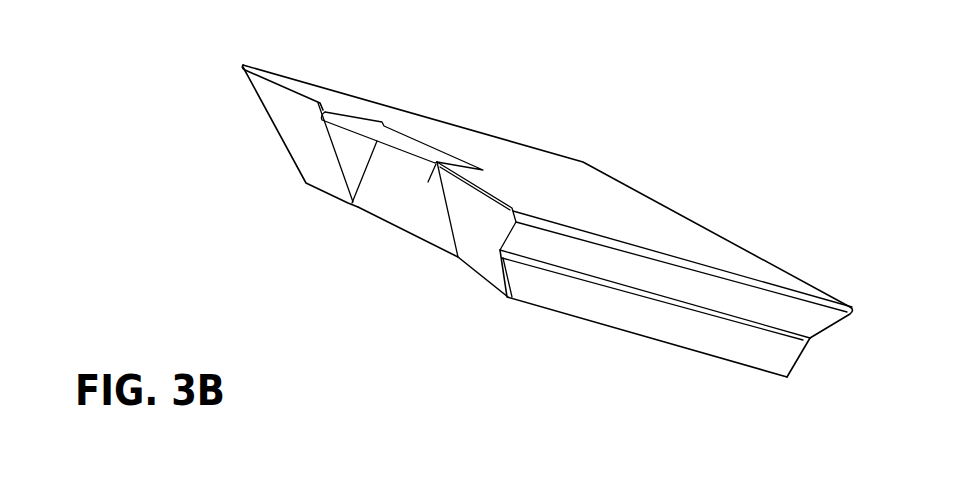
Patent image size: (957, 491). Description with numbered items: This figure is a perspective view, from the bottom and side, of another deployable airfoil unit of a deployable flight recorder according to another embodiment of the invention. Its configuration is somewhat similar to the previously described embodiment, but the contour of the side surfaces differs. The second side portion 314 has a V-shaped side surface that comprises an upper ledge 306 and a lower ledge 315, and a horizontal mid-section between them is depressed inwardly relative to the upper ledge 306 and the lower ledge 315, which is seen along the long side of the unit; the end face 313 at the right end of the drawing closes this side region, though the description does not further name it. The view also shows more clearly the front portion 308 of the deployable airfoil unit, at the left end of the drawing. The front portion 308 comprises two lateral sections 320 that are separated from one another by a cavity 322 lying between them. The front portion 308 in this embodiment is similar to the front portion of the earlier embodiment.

The upper ledge 306 is at (790, 296).
The front portion 308 is at (323, 91).
The end wall 313 is at (820, 343).
The second side portion 314 is at (768, 350).
The lower ledge 315 is at (697, 337).
The lateral sections 320 is at (345, 184).
The cavity 322 is at (387, 187).